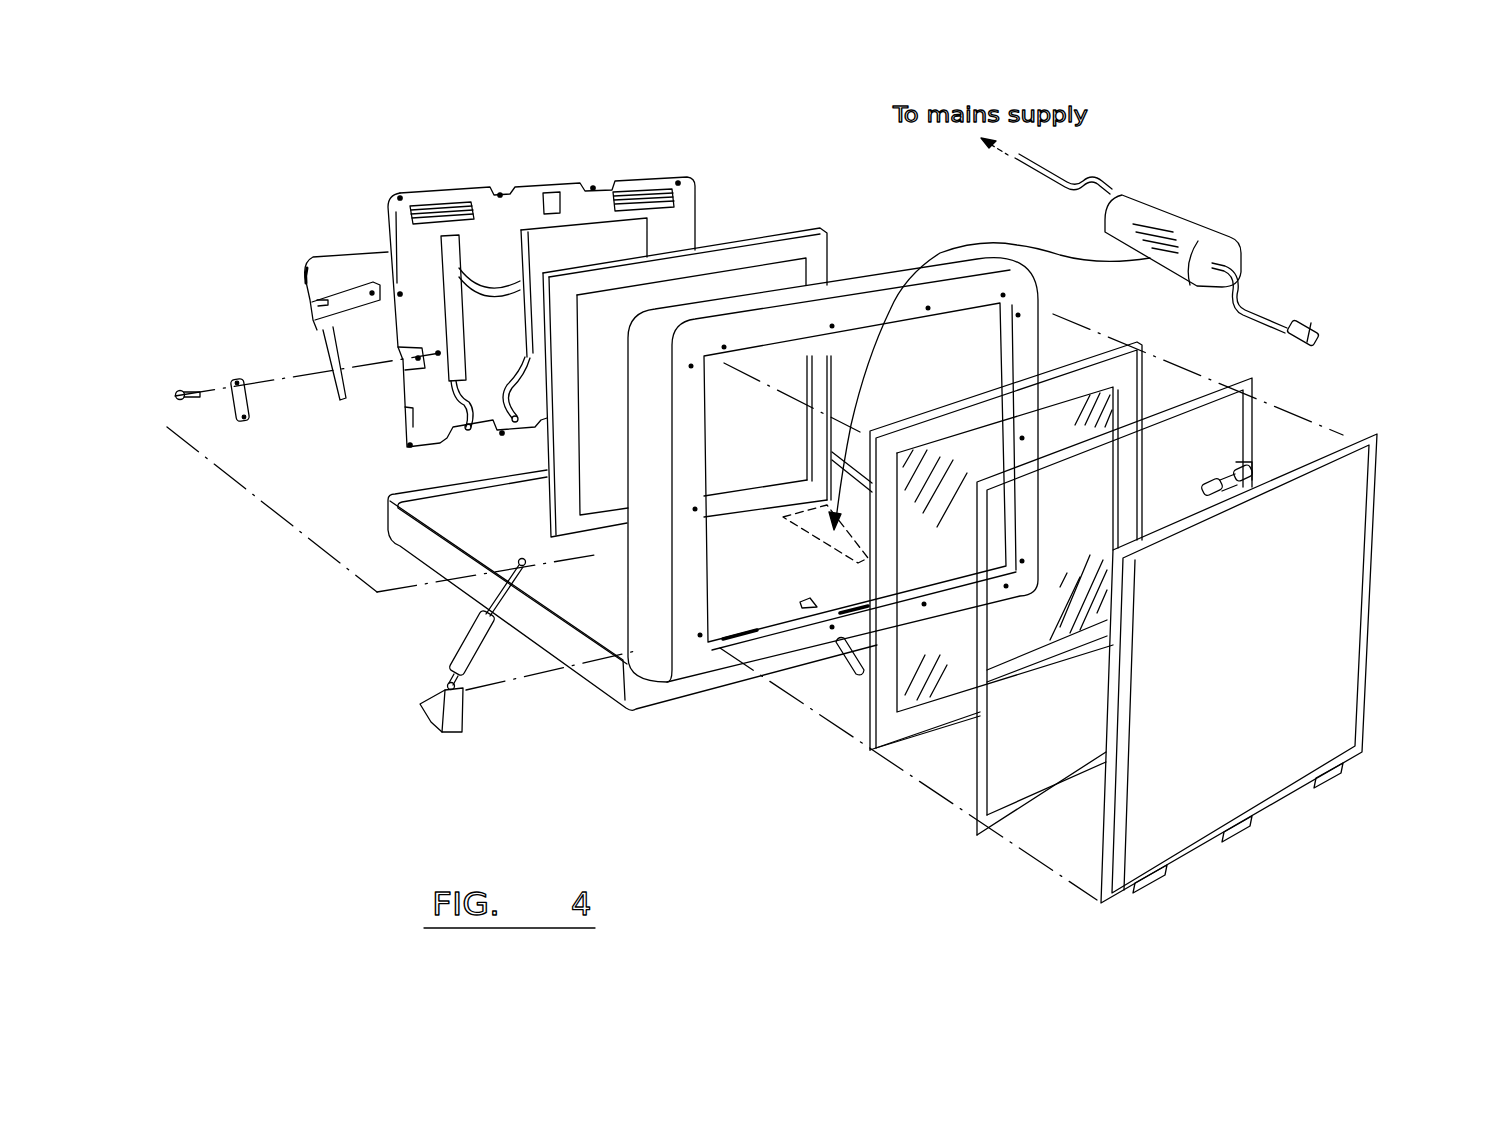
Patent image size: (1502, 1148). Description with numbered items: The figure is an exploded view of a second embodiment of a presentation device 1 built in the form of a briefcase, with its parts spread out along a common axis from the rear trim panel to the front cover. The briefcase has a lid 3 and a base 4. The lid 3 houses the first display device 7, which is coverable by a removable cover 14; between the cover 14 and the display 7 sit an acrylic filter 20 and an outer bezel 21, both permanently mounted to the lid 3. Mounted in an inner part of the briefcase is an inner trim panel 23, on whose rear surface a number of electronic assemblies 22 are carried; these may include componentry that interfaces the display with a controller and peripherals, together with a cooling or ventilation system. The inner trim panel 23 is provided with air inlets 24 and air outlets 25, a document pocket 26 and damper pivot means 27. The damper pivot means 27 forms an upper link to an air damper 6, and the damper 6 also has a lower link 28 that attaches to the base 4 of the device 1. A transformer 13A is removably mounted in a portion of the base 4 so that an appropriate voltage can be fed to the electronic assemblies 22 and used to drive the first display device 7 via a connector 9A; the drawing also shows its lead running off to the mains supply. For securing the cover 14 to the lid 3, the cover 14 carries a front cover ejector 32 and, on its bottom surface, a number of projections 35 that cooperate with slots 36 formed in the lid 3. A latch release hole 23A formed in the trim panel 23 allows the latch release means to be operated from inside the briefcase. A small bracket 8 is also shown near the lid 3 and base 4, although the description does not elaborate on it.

The presentation device 1 is at (352, 178).
The lid 3 is at (868, 282).
The base 4 is at (417, 545).
The air damper 6 is at (473, 647).
The first display device 7 is at (743, 242).
The bracket 8 is at (847, 663).
The connector 9A is at (1303, 326).
The transformer 13A is at (1178, 225).
The removable cover 14 is at (1371, 590).
The acrylic filter 20 is at (933, 717).
The outer bezel 21 is at (1027, 802).
The electronic assemblies 22 is at (590, 230).
The inner trim panel 23 is at (510, 187).
The latch release hole 23A is at (553, 197).
The air inlets 24 is at (463, 440).
The air outlets 25 is at (433, 213).
The document pocket 26 is at (343, 252).
The damper pivot means 27 is at (232, 380).
The lower link 28 is at (433, 712).
The front cover ejector 32 is at (1251, 461).
The projections 35 is at (1330, 781).
The slots 36 is at (840, 607).